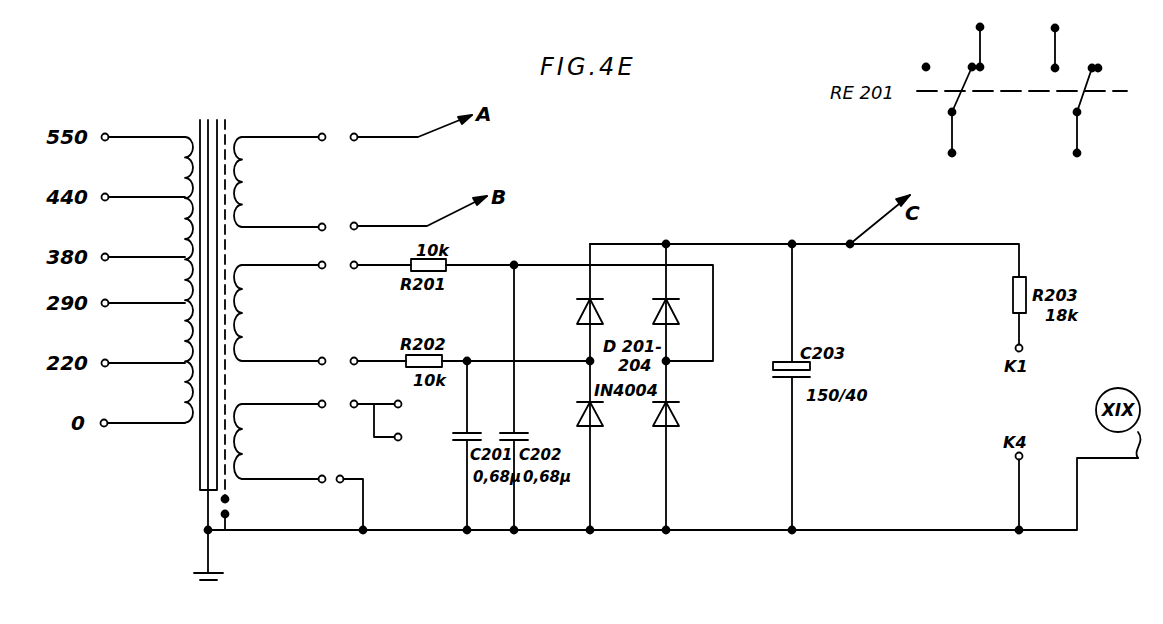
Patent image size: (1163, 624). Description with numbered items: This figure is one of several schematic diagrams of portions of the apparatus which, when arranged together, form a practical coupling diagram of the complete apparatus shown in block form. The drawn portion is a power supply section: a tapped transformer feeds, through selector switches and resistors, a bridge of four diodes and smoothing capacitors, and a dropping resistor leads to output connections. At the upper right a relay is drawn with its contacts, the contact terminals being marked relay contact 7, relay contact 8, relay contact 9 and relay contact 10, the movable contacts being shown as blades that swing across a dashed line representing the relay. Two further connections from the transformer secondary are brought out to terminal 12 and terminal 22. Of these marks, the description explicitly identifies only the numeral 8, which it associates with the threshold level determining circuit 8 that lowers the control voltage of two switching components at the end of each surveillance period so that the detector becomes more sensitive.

The relay RE201 contact terminal 7 is at (960, 42).
The threshold level determining circuit 8 is at (967, 116).
The relay RE201 contact terminal 9 is at (1093, 117).
The relay RE201 contact terminal 10 is at (1036, 44).
The transformer secondary output terminal 12 is at (392, 404).
The transformer secondary output terminal 22 is at (403, 426).